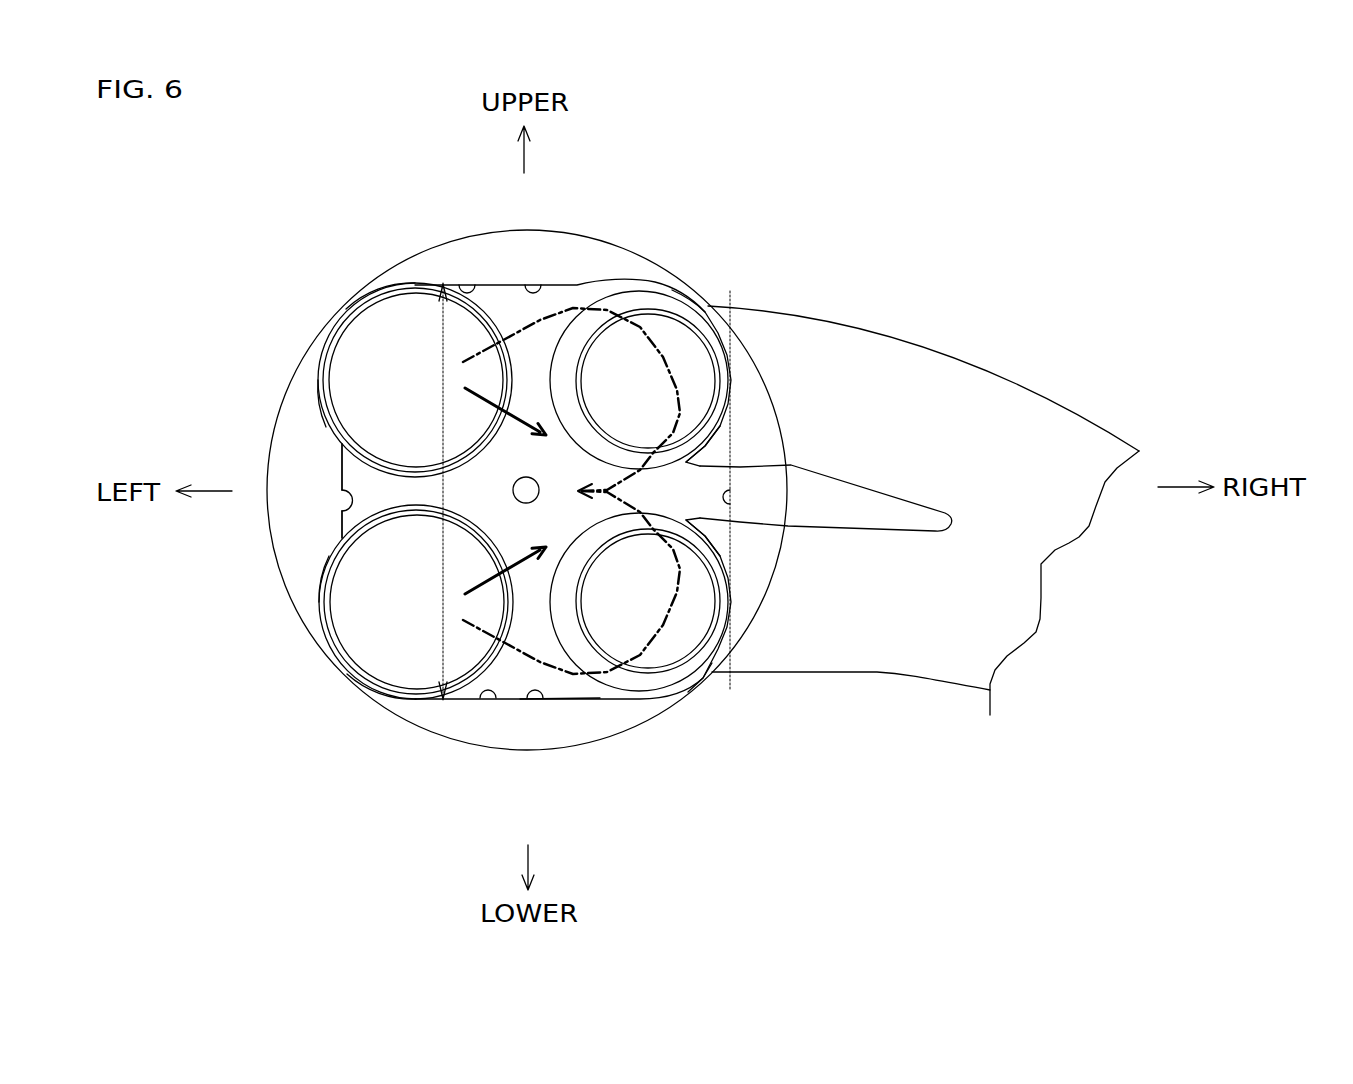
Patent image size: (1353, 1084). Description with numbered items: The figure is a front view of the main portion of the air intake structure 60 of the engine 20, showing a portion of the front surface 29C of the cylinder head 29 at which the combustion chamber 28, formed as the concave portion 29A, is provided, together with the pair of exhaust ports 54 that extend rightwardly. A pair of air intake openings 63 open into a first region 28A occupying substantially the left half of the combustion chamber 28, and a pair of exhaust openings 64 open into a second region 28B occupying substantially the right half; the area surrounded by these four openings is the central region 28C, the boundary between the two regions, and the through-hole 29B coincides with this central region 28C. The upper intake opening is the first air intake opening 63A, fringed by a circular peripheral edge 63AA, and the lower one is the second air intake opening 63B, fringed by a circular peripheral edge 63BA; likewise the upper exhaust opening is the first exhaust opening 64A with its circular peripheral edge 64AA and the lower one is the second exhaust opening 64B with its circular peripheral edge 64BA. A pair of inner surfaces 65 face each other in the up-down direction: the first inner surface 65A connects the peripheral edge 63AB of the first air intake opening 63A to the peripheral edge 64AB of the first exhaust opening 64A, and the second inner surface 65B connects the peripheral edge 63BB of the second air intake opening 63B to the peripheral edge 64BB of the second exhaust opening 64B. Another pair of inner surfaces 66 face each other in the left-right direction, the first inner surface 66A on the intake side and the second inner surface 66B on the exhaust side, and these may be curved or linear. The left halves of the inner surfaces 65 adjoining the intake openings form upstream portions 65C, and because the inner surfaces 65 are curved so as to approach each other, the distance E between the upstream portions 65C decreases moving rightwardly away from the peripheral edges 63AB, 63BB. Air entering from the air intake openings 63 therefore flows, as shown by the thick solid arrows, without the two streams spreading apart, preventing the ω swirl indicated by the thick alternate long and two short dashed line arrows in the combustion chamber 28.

The air intake structure 60 is at (760, 158).
The engine 20 is at (561, 425).
The exhaust ports 54 is at (939, 372).
The cylinder head 29 is at (536, 443).
The front surface 29C is at (618, 258).
The concave portion 29A is at (607, 618).
The through-hole 29B is at (607, 442).
The combustion chamber 28 is at (607, 618).
The first region 28A is at (367, 485).
The second region 28B is at (605, 693).
The central region 28C is at (607, 540).
The air intake openings 63 is at (359, 491).
The first air intake opening 63A is at (352, 358).
The second air intake opening 63B is at (360, 637).
The peripheral edge 63AB is at (375, 292).
The circular peripheral edge 63AA is at (325, 410).
The circular peripheral edge 63BA is at (323, 587).
The peripheral edge 63BB is at (370, 700).
The exhaust openings 64 is at (691, 493).
The first exhaust opening 64A is at (697, 357).
The second exhaust opening 64B is at (700, 623).
The peripheral edge 64AB is at (707, 310).
The circular peripheral edge 64AA is at (740, 454).
The circular peripheral edge 64BA is at (740, 530).
The peripheral edge 64BB is at (707, 672).
The inner surfaces 65 is at (513, 494).
The first inner surface 65A is at (543, 288).
The second inner surface 65B is at (535, 693).
The upstream portion 65C is at (468, 290).
The inner surfaces 66 is at (624, 519).
The first inner surface 66A is at (343, 515).
The second inner surface 66B is at (730, 505).
The distance E is at (447, 491).